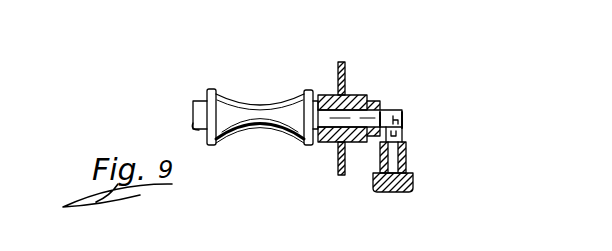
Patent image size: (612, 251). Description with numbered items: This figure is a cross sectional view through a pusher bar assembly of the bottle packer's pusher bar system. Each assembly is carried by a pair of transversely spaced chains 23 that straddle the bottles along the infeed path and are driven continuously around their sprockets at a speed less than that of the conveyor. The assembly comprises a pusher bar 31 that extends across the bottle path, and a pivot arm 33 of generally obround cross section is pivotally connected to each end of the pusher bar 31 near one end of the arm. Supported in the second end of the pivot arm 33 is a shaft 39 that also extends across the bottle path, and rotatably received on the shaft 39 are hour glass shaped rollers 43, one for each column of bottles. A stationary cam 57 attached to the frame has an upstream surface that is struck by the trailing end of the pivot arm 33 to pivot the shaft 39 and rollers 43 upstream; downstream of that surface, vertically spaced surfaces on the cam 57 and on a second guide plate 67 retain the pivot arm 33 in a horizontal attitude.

The chain 23 is at (400, 158).
The pusher bar 31 is at (379, 107).
The pivot arm 33 is at (348, 95).
The shaft 39 is at (192, 112).
The hour glass roller 43 is at (230, 98).
The cam 57 is at (345, 58).
The second guide plate 67 is at (337, 162).